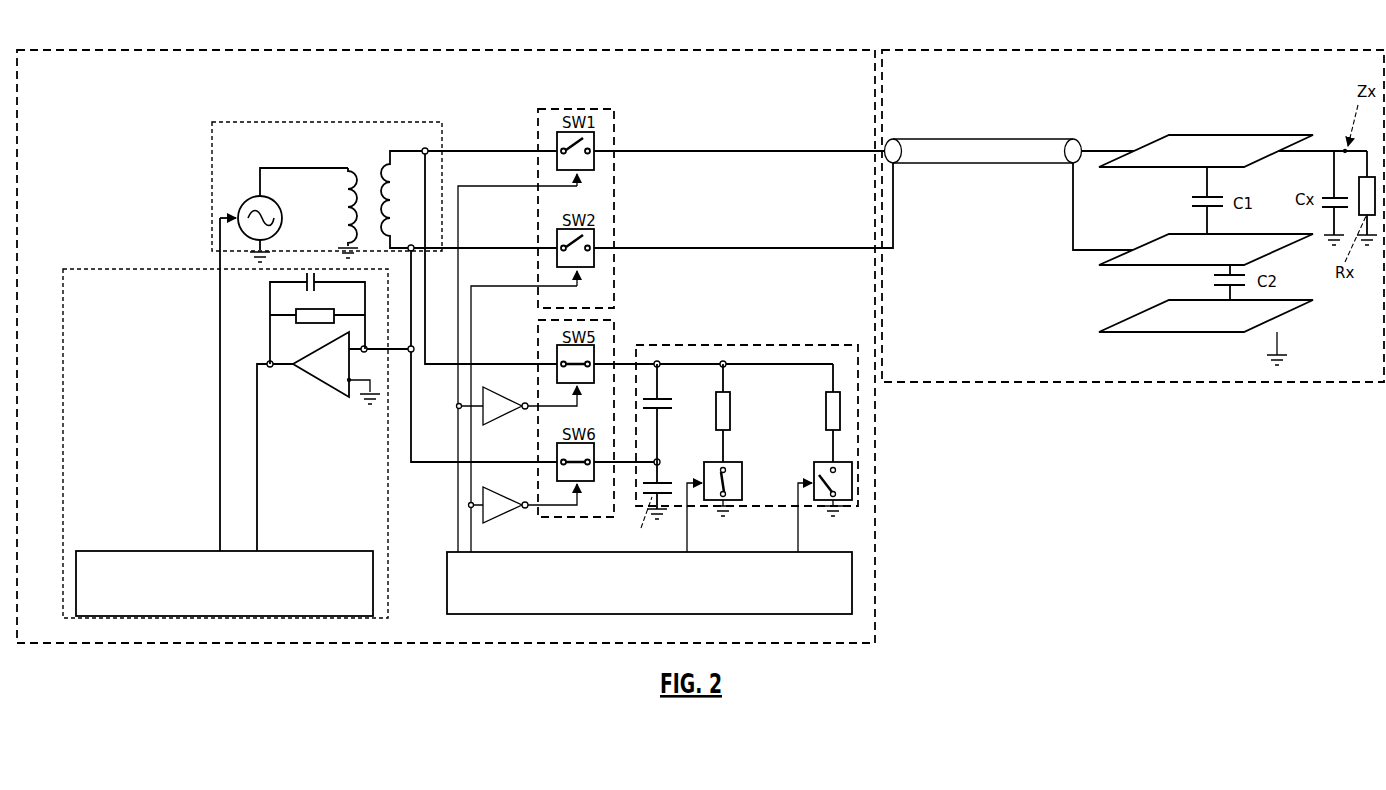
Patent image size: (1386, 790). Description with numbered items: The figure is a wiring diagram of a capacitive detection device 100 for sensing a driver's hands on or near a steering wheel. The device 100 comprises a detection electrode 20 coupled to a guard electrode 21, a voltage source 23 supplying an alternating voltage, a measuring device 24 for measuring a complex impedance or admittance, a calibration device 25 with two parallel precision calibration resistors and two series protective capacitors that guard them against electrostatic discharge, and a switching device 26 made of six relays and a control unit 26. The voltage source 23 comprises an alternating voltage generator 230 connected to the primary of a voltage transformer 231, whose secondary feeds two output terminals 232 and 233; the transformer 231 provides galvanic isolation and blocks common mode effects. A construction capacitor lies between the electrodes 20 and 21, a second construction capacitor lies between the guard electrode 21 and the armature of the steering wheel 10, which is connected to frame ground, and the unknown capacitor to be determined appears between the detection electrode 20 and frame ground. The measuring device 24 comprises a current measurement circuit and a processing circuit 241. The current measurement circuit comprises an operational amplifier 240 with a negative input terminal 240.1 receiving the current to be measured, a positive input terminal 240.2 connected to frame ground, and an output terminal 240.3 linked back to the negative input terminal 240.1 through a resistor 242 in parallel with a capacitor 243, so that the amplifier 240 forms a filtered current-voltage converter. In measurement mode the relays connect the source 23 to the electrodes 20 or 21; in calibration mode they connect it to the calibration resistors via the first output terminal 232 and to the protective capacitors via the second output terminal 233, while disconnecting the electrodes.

The capacitive detection device 100 is at (1029, 477).
The voltage source 23 is at (212, 143).
The alternating voltage generator 230 is at (235, 216).
The voltage transformer 231 is at (368, 168).
The output terminal 232 is at (485, 247).
The output terminal 233 is at (477, 344).
The measuring device 24 is at (145, 269).
The operational amplifier 240 is at (317, 381).
The negative input terminal 240.1 is at (381, 359).
The positive input terminal 240.2 is at (352, 383).
The output terminal 240.3 is at (286, 375).
The processing circuit 241 is at (224, 417).
The resistor 242 is at (317, 323).
The capacitor 243 is at (303, 287).
The calibration device 25 is at (744, 344).
The switching device / control unit 26 is at (649, 584).
The detection electrode 20 is at (1172, 148).
The guard electrode 21 is at (1163, 247).
The armature of the steering wheel 10 is at (1285, 305).